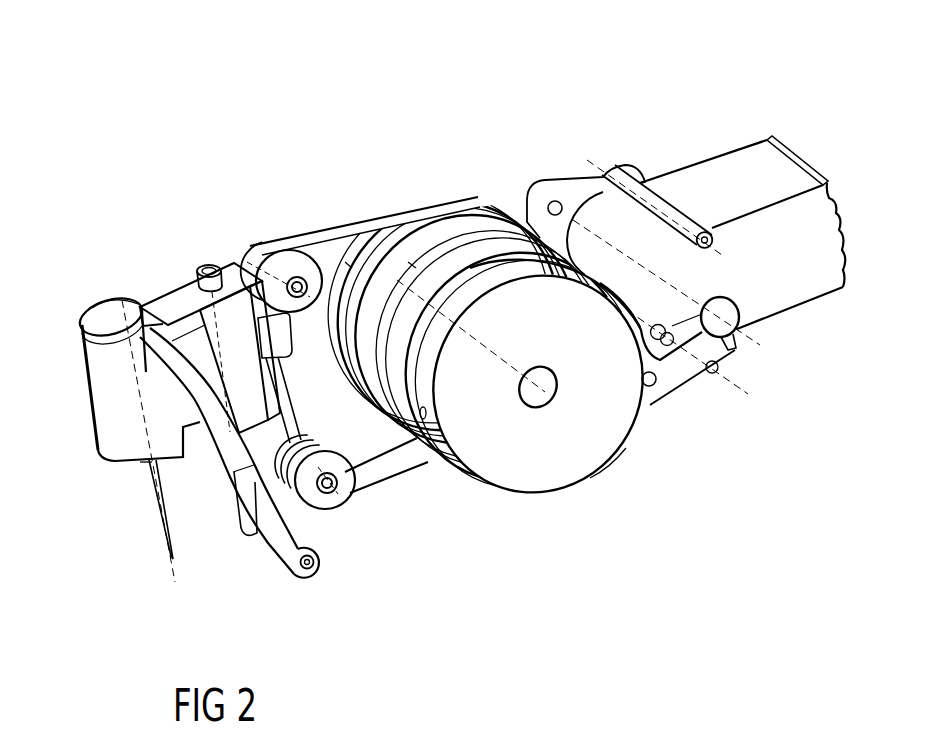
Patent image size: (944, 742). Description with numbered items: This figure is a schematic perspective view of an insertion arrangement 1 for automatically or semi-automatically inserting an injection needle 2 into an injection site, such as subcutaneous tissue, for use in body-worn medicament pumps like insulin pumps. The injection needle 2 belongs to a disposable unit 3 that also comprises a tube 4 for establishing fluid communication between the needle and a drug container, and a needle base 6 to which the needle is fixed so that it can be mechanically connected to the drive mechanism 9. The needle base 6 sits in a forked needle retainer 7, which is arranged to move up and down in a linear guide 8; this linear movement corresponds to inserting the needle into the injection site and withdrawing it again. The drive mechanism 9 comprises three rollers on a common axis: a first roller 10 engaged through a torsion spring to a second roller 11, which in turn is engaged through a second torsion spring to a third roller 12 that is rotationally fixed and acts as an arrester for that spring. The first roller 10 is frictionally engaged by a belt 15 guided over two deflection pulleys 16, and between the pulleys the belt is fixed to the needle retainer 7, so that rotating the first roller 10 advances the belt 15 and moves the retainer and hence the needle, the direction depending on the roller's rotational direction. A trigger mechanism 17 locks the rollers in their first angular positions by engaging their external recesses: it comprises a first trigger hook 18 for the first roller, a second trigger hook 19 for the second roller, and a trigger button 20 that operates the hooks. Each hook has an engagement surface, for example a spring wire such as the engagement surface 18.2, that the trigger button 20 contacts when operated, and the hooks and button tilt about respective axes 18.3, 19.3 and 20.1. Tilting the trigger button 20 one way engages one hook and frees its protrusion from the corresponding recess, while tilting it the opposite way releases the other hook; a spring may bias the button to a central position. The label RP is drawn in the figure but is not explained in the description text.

The insertion arrangement 1 is at (248, 112).
The injection needle 2 is at (163, 543).
The disposable unit 3 is at (85, 309).
The tube 4 is at (290, 557).
The needle base 6 is at (107, 403).
The needle retainer 7 is at (170, 297).
The linear guide 8 is at (210, 268).
The drive mechanism 9 is at (611, 463).
The first roller 10 is at (432, 202).
The second roller 11 is at (467, 228).
The third roller 12 is at (538, 470).
The belt 15 is at (383, 463).
The deflection pulleys 16 is at (292, 267).
The trigger mechanism 17 is at (790, 313).
The first trigger hook 18 is at (603, 180).
The engagement surface 18.2 is at (663, 208).
The axis 18.3 is at (556, 205).
The second trigger hook 19 is at (690, 362).
The axis 19.3 is at (651, 385).
The trigger button 20 is at (772, 163).
The axis 20.1 is at (737, 350).
The reference point RP is at (146, 466).